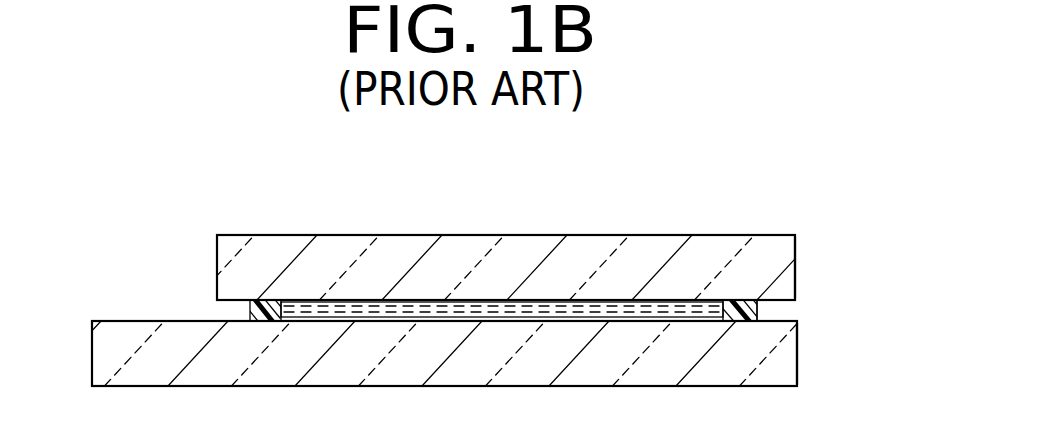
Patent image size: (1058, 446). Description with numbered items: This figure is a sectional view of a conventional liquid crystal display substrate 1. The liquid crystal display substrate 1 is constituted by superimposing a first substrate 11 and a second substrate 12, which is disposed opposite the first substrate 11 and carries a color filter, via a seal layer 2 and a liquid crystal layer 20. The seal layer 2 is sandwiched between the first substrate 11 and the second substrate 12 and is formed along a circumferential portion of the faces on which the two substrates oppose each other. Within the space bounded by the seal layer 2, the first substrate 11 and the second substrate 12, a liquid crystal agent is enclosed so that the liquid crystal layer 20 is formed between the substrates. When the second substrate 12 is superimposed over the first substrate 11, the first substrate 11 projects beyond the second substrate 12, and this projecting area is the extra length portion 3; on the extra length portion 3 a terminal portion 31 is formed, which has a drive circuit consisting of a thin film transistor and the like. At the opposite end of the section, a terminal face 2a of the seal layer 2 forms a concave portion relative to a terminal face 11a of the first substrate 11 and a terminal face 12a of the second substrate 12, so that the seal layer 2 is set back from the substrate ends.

The liquid crystal display substrate 1 is at (301, 221).
The seal layer 2 is at (258, 322).
The terminal face of the seal layer 2a is at (760, 303).
The extra length portion 3 is at (192, 320).
The first substrate 11 is at (453, 370).
The terminal face of the first substrate 11a is at (798, 358).
The second substrate 12 is at (472, 243).
The terminal face of the second substrate 12a is at (797, 260).
The liquid crystal layer 20 is at (322, 315).
The terminal portion 31 is at (122, 320).